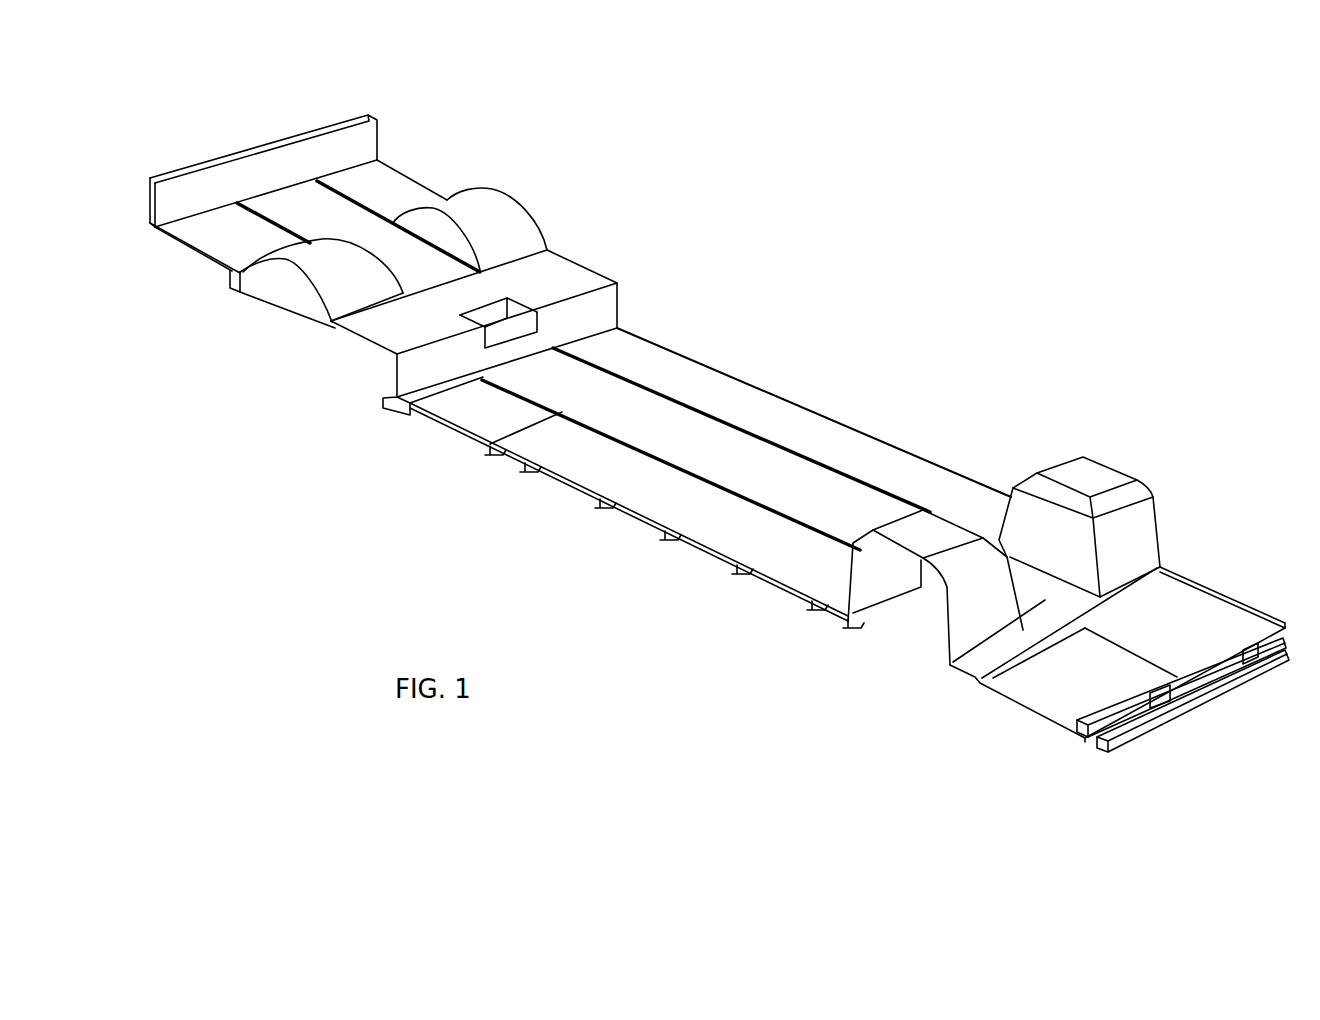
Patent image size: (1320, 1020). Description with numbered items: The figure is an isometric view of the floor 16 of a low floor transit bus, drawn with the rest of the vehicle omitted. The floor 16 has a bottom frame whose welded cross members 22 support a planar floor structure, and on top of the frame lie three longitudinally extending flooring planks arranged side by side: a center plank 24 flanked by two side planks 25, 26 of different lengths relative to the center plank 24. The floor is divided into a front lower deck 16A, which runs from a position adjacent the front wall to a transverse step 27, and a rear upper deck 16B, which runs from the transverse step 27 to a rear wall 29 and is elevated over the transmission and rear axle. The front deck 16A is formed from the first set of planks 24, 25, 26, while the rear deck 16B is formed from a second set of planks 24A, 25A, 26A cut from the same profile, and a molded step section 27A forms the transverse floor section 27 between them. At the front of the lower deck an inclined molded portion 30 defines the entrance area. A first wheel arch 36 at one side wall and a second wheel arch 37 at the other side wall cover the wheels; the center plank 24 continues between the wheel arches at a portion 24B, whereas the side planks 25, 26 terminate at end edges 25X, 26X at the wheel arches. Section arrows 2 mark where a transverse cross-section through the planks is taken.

The section line of FIG. 2 is at (707, 557).
The floor 16 is at (794, 387).
The front lower deck 16A is at (851, 404).
The rear upper deck 16B is at (438, 180).
The cross members 22 is at (819, 617).
The center plank 24 is at (650, 410).
The center plank 24A is at (293, 197).
The portion of center plank 24B is at (1048, 598).
The side plank 25 is at (657, 500).
The side plank 25A is at (217, 238).
The end edge 25X is at (850, 627).
The side plank 26 is at (720, 387).
The side plank 26A is at (383, 183).
The end edge 26X is at (997, 540).
The transverse step 27 is at (401, 332).
The molded step section 27A is at (587, 310).
The rear wall 29 is at (173, 193).
The inclined molded portion 30 is at (1050, 685).
The first wheel arch 36 is at (960, 607).
The second wheel arch 37 is at (1097, 470).